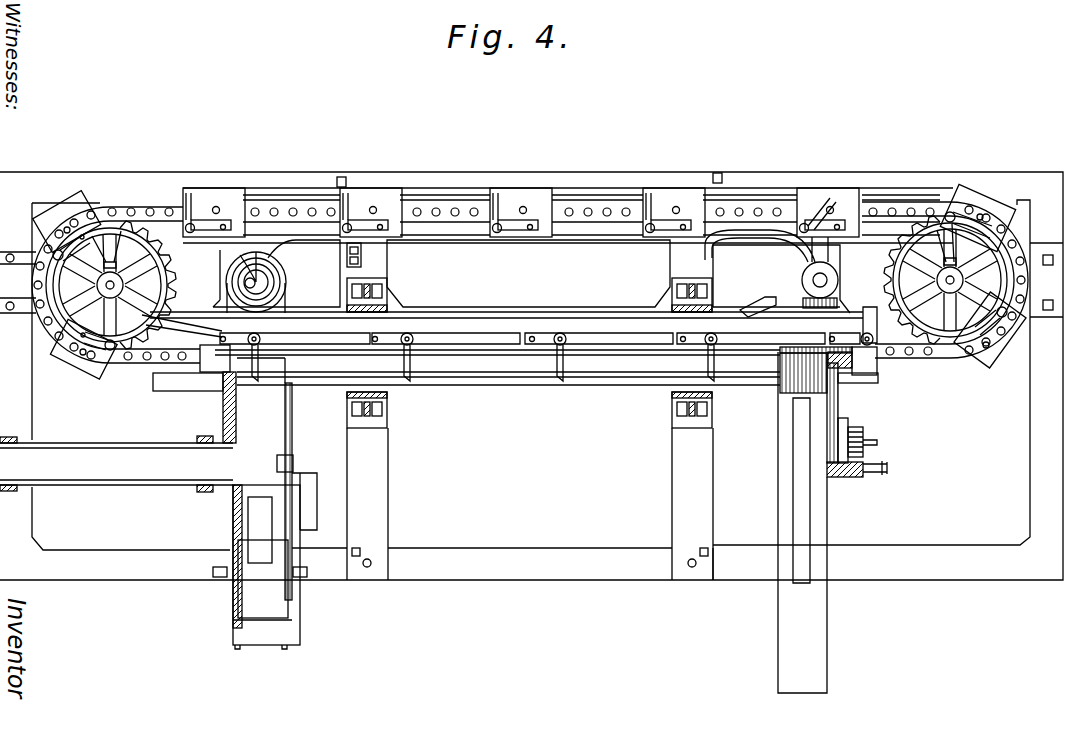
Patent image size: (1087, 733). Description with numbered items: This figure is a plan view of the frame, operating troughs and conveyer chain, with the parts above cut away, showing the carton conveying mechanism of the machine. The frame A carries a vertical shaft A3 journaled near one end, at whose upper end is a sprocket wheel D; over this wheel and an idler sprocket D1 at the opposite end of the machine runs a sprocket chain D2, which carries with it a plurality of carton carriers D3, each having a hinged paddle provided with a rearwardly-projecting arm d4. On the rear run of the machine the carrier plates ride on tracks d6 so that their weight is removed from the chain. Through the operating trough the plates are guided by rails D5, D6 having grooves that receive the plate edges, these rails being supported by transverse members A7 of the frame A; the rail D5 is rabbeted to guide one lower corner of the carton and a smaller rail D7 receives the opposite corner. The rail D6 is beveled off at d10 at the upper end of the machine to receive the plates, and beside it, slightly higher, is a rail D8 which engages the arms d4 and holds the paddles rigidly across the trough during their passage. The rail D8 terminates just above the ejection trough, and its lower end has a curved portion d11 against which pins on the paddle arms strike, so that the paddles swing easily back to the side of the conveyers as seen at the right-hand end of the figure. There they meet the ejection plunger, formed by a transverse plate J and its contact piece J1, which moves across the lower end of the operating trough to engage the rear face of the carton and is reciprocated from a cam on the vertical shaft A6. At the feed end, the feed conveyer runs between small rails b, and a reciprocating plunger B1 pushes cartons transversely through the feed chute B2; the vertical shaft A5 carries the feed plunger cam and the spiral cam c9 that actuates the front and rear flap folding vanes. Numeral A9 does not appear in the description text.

The frame A is at (540, 578).
The vertical shaft A3 is at (950, 280).
The vertical shaft A5 is at (263, 280).
The vertical shaft A6 is at (822, 280).
The transverse members A7 is at (530, 504).
The bearing block A9 is at (390, 282).
The reciprocating plunger B1 is at (233, 527).
The feed chute B2 is at (223, 472).
The rails b is at (121, 440).
The spiral cam c9 is at (287, 274).
The sprocket wheel D is at (933, 237).
The idler sprocket D1 is at (133, 237).
The sprocket chain D2 is at (450, 210).
The carton carriers D3 is at (430, 417).
The rail D5 is at (517, 380).
The rail D6 is at (493, 310).
The smaller rail D7 is at (608, 358).
The rail D8 is at (578, 320).
The rearwardly-projecting arm d4 is at (545, 330).
The tracks d6 is at (593, 225).
The bevel d10 is at (143, 357).
The curved portion d11 is at (755, 303).
The transverse plate J is at (837, 412).
The contact piece J1 is at (800, 357).